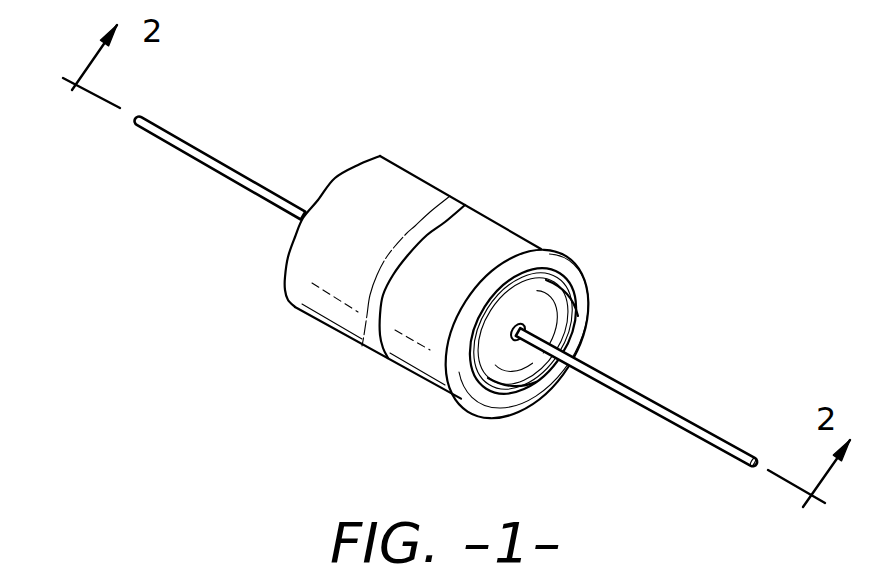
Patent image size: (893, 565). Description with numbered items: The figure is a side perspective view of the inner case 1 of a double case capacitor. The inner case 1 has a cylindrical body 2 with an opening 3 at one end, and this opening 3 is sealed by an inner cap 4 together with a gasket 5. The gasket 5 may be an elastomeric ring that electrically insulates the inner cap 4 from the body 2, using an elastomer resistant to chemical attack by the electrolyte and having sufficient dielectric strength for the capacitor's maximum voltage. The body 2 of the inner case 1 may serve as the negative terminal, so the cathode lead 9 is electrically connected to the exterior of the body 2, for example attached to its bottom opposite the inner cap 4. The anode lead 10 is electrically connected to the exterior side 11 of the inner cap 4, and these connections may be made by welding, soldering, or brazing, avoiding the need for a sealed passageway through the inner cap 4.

The inner case 1 is at (466, 288).
The body 2 is at (498, 232).
The opening 3 is at (543, 309).
The inner cap 4 is at (541, 292).
The gasket 5 is at (557, 330).
The cathode lead 9 is at (238, 168).
The anode lead 10 is at (658, 402).
The exterior side of inner cap 11 is at (533, 387).